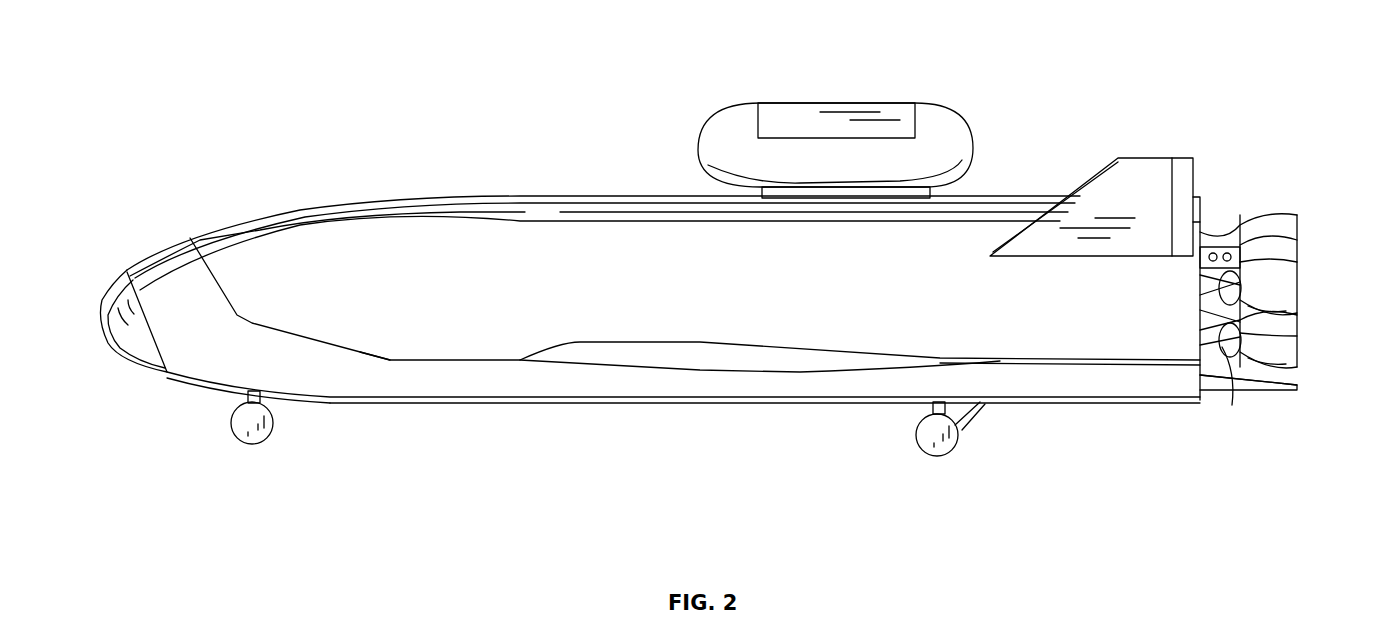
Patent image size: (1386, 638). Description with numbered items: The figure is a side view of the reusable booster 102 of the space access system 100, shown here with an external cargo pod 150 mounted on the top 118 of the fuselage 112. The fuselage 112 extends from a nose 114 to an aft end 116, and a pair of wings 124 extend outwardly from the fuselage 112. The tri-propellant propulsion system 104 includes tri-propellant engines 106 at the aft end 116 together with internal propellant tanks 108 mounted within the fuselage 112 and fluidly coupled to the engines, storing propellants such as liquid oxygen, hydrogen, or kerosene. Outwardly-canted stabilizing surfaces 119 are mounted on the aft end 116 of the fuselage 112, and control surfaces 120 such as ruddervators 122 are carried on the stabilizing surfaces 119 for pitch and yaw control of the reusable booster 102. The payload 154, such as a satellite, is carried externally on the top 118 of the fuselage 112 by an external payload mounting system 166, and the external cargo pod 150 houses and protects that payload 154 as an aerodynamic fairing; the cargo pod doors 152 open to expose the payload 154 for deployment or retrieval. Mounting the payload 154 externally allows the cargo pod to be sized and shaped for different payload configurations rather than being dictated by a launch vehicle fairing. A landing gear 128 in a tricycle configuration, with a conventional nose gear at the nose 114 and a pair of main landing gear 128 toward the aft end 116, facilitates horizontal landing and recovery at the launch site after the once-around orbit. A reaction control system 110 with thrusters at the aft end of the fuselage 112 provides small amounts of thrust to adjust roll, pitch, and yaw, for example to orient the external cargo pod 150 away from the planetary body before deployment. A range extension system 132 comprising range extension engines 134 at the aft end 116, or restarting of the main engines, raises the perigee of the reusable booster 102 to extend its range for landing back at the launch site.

The space access system 100 is at (232, 212).
The reusable booster 102 is at (322, 212).
The tri-propellant propulsion system 104 is at (1217, 222).
The tri-propellant engine 106 is at (1278, 214).
The internal propellant tank 108 is at (545, 250).
The reaction control system 110 is at (1300, 238).
The fuselage 112 is at (410, 205).
The nose 114 is at (105, 332).
The aft end 116 is at (1182, 335).
The top 118 is at (650, 197).
The stabilizing surface 119 is at (1123, 166).
The control surface 120 is at (1117, 370).
The ruddervator 122 is at (1178, 170).
The wing 124 is at (668, 352).
The landing gear 128 is at (237, 442).
The range extension system 132 is at (1300, 301).
The range extension engine 134 is at (1222, 355).
The external cargo pod 150 is at (735, 110).
The cargo pod door 152 is at (800, 120).
The payload 154 is at (870, 118).
The external payload mounting system 166 is at (800, 200).